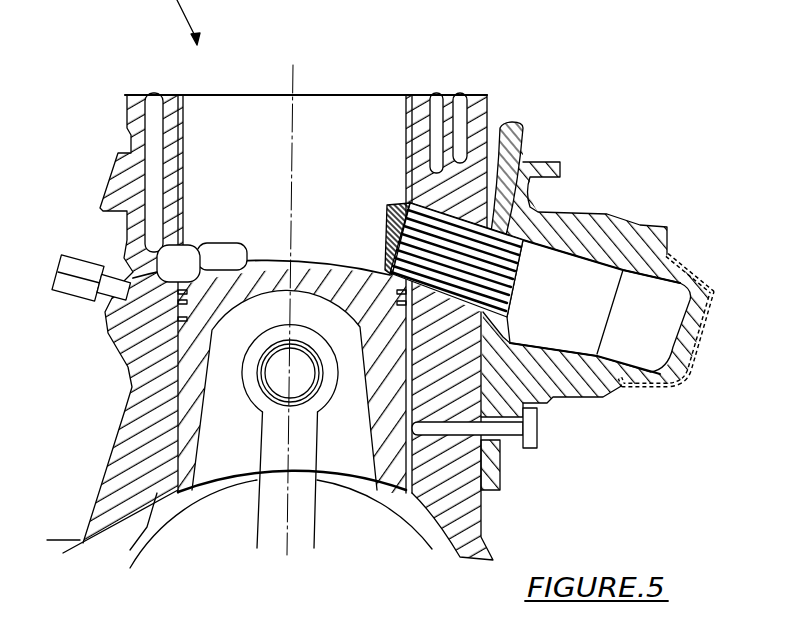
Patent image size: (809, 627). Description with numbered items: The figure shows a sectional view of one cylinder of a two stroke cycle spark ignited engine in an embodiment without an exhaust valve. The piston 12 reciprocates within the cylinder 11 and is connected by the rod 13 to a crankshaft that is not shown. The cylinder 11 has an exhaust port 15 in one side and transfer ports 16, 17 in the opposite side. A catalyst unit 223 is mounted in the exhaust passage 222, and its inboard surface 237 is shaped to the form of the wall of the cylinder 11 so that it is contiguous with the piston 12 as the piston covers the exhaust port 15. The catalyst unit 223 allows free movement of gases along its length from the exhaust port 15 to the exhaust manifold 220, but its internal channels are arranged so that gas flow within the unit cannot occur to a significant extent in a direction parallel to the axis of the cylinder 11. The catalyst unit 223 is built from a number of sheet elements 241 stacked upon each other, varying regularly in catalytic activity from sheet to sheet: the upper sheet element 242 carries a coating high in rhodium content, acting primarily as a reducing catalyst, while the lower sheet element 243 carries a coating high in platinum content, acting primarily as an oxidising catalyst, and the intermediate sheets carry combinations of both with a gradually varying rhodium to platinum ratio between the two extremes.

The cylinder 11 is at (243, 113).
The piston 12 is at (138, 348).
The rod 13 is at (257, 507).
The exhaust port 15 is at (397, 200).
The transfer port 16 is at (173, 263).
The transfer port 17 is at (220, 253).
The exhaust manifold 220 is at (712, 293).
The exhaust passage 222 is at (443, 305).
The catalyst unit 223 is at (515, 160).
The inboard surface 237 is at (387, 230).
The sheet elements 241 is at (523, 162).
The upper sheet element 242 is at (558, 245).
The lower sheet element 243 is at (513, 312).